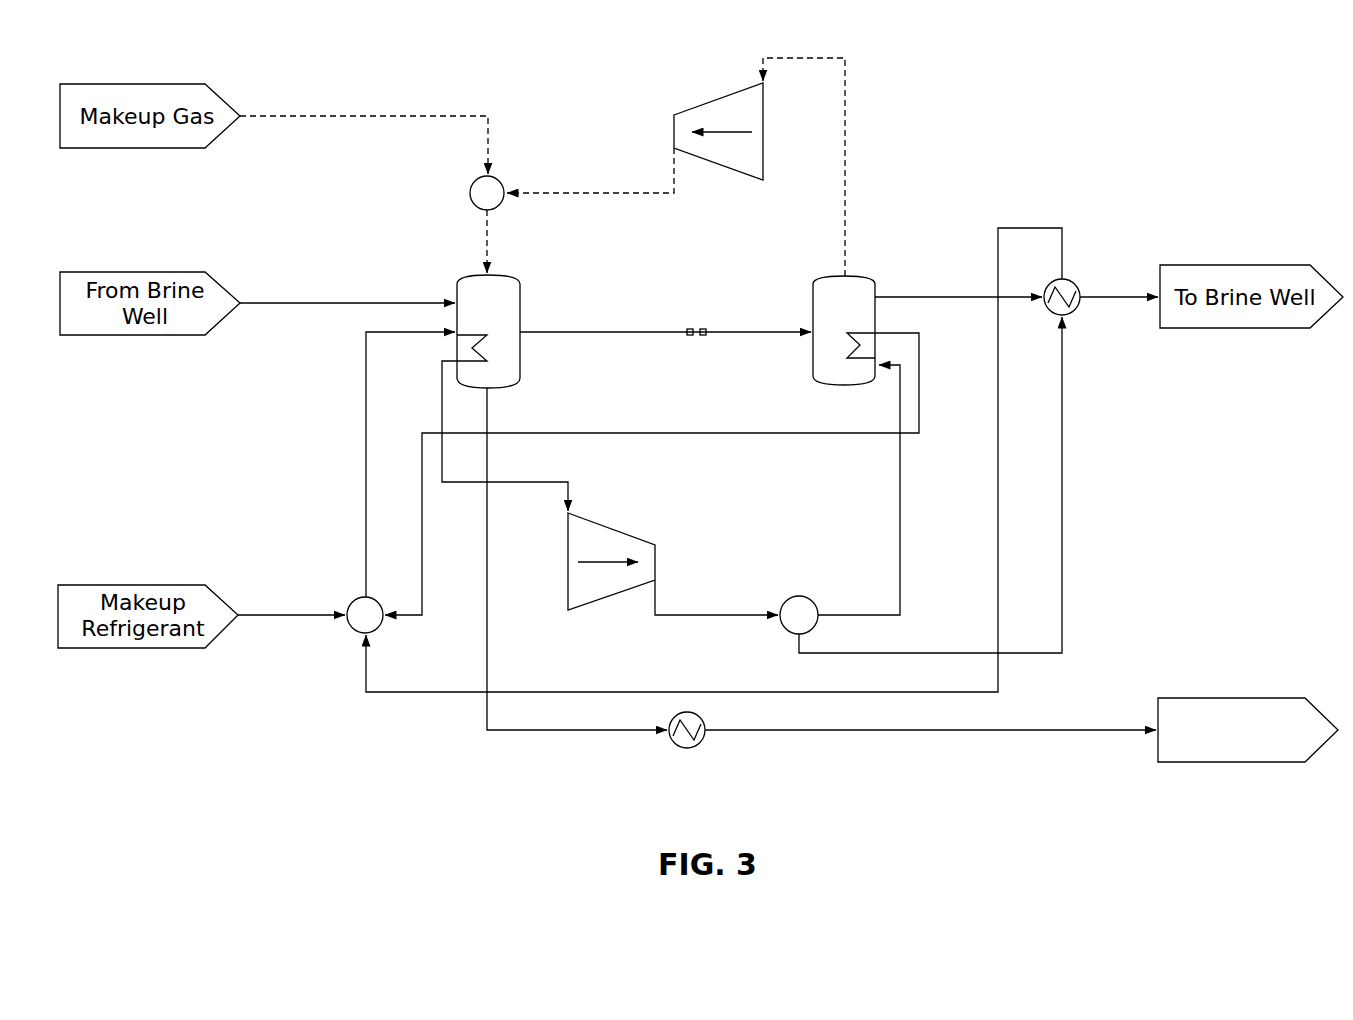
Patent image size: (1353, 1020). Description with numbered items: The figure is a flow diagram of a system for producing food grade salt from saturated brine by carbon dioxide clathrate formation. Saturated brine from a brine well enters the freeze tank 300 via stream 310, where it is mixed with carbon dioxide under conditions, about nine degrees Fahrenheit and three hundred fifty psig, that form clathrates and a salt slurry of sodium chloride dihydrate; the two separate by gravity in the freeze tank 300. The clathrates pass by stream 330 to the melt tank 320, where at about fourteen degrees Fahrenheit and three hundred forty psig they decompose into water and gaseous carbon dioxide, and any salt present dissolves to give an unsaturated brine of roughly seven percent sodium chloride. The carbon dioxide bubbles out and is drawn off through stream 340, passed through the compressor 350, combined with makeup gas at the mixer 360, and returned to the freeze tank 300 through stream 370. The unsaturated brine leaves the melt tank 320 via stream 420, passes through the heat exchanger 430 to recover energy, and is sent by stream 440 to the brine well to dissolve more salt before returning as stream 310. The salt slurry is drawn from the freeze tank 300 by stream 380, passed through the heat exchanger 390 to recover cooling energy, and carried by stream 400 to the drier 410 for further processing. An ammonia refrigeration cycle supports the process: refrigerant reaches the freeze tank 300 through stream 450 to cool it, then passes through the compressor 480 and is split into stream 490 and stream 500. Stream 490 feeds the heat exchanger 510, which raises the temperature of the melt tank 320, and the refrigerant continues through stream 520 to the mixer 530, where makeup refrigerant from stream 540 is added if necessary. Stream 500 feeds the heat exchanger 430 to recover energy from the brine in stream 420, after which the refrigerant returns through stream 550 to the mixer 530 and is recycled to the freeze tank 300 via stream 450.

The freeze tank 300 is at (520, 300).
The stream 310 is at (351, 303).
The melt tank 320 is at (845, 276).
The stream 330 is at (668, 332).
The stream 340 is at (848, 108).
The compressor 350 is at (722, 100).
The mixer 360 is at (500, 178).
The stream 370 is at (488, 240).
The stream 380 is at (487, 465).
The heat exchanger 390 is at (691, 750).
The stream 400 is at (935, 730).
The drier 410 is at (1230, 762).
The stream 420 is at (947, 297).
The heat exchanger 430 is at (1071, 312).
The stream 440 is at (1120, 297).
The stream 450 is at (366, 465).
The compressor 480 is at (610, 526).
The stream 490 is at (900, 490).
The stream 500 is at (1062, 483).
The heat exchanger 510 is at (872, 340).
The stream 520 is at (686, 433).
The mixer 530 is at (353, 632).
The stream 540 is at (306, 615).
The stream 550 is at (681, 692).